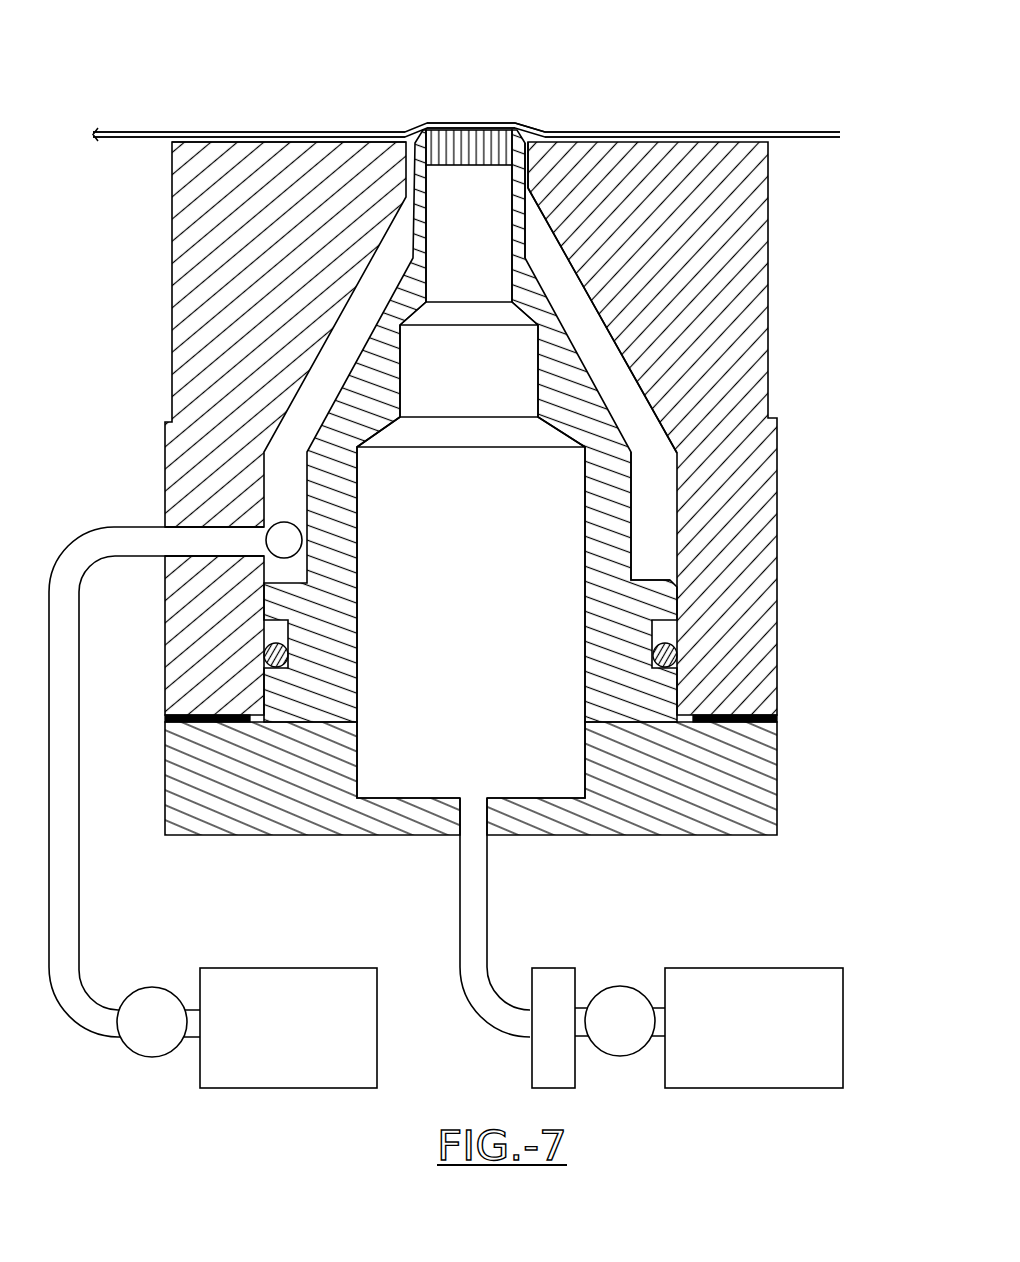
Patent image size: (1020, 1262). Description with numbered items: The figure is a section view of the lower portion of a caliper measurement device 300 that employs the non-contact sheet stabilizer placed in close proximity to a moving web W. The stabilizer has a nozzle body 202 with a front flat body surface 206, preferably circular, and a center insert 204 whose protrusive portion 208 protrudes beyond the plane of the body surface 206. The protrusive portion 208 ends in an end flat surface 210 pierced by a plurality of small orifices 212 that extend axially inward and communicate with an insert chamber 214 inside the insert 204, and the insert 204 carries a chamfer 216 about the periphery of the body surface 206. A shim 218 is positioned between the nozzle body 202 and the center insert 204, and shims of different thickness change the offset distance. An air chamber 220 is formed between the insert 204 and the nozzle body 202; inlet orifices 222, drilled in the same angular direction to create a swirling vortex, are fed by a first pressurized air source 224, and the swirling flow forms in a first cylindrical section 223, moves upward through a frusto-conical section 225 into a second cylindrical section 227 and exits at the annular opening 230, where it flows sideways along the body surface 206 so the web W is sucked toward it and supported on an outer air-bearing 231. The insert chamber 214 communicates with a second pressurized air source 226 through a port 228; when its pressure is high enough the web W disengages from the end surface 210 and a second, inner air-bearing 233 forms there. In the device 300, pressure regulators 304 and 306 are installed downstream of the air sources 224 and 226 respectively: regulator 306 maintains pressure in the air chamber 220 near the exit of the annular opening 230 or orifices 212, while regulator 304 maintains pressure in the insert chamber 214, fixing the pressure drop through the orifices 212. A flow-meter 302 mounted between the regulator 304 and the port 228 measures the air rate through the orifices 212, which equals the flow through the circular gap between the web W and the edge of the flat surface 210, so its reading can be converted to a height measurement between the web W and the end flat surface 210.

The web W is at (157, 129).
The nozzle body 202 is at (216, 289).
The center insert 204 is at (674, 783).
The body surface 206 is at (236, 149).
The protrusive portion 208 is at (418, 180).
The end flat surface 210 is at (494, 126).
The small orifices 212 is at (447, 139).
The insert chamber 214 is at (439, 633).
The chamfer 216 is at (530, 127).
The shim 218 is at (209, 725).
The air chamber 220 is at (590, 300).
The inlet orifices 222 is at (282, 536).
The first cylindrical section 223 is at (655, 508).
The first pressurized air source 224 is at (258, 1040).
The frusto-conical section 225 is at (604, 366).
The second pressurized air source 226 is at (730, 1040).
The second cylindrical section 227 is at (534, 181).
The port 228 is at (485, 816).
The annular opening 230 is at (532, 151).
The air-bearing 231 is at (735, 126).
The second air-bearing 233 is at (474, 125).
The caliper measurement device 300 is at (787, 87).
The flow-meter 302 is at (553, 986).
The pressure regulator 304 is at (599, 1034).
The pressure regulator 306 is at (134, 1038).